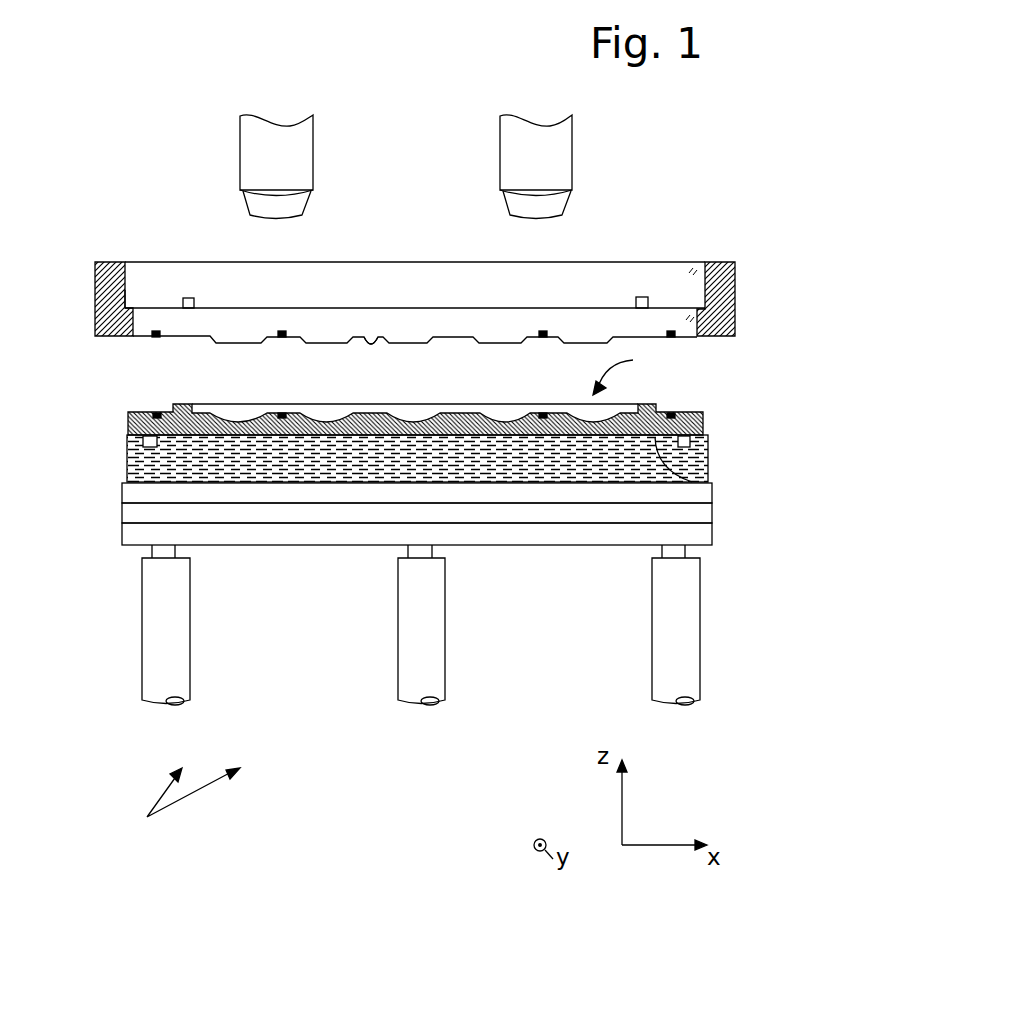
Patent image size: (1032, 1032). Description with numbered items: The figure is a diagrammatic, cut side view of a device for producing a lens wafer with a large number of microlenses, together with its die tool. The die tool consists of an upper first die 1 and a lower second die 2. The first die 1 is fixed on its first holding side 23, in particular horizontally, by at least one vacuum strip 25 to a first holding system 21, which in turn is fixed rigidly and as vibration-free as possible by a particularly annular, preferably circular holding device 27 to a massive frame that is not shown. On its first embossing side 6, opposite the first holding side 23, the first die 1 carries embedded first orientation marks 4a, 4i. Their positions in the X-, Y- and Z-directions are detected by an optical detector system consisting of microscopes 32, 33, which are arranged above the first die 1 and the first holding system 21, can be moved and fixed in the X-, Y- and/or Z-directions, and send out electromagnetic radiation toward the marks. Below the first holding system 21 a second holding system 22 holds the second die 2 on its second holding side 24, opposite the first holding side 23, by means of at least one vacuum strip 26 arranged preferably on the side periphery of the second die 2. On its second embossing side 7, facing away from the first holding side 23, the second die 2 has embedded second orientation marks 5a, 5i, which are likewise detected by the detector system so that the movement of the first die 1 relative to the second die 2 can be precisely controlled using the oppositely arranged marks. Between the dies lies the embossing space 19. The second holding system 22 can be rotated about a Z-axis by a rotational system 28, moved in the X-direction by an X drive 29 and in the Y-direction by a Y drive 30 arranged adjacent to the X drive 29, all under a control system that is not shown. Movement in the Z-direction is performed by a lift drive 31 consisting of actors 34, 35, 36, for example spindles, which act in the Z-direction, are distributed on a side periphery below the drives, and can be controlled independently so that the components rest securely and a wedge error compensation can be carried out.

The first die 1 is at (430, 293).
The second die 2 is at (399, 327).
The first orientation mark 4a is at (155, 338).
The first orientation mark 4i is at (282, 338).
The second orientation mark 5a is at (157, 414).
The second orientation mark 5i is at (282, 413).
The first embossing side 6 is at (373, 337).
The second embossing side 7 is at (382, 412).
The embossing space 19 is at (630, 370).
The first holding system 21 is at (622, 275).
The second holding system 22 is at (442, 437).
The first holding side 23 is at (560, 309).
The second holding side 24 is at (449, 510).
The vacuum strip 25 is at (646, 301).
The vacuum strip 26 is at (686, 438).
The holding device 27 is at (112, 278).
The rotational system 28 is at (705, 493).
The X drive 29 is at (705, 518).
The Y drive 30 is at (705, 538).
The lift drive 31 is at (181, 807).
The microscope 32 is at (265, 157).
The microscope 33 is at (550, 157).
The actor 34 is at (680, 643).
The actor 35 is at (430, 642).
The actor 36 is at (167, 642).